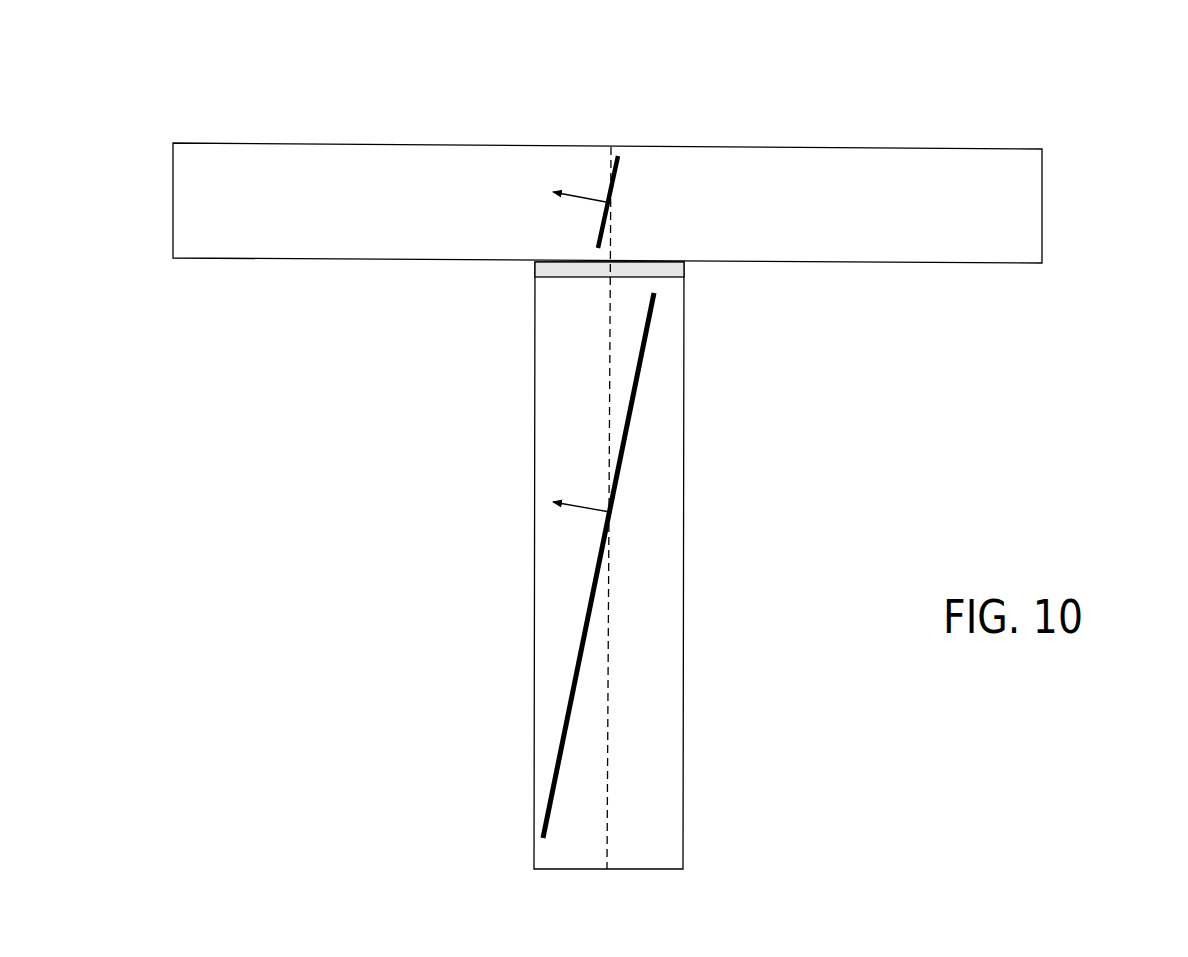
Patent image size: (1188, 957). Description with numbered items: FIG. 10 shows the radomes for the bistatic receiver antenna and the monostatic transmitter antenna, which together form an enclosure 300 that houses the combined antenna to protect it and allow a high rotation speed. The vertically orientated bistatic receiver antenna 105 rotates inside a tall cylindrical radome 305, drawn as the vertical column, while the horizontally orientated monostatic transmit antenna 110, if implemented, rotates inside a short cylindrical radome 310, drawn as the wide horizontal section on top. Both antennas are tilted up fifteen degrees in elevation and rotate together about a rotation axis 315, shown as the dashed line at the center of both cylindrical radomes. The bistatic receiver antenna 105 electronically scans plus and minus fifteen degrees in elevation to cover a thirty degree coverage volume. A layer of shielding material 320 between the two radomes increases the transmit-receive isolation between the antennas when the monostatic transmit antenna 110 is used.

The enclosure 300 is at (420, 70).
The short cylindrical radome 310 is at (1042, 194).
The tall cylindrical radome 305 is at (683, 530).
The shielding material 320 is at (568, 278).
The monostatic transmit antenna 110 is at (617, 183).
The bistatic receiver antenna 105 is at (633, 415).
The rotation axis 315 is at (607, 776).